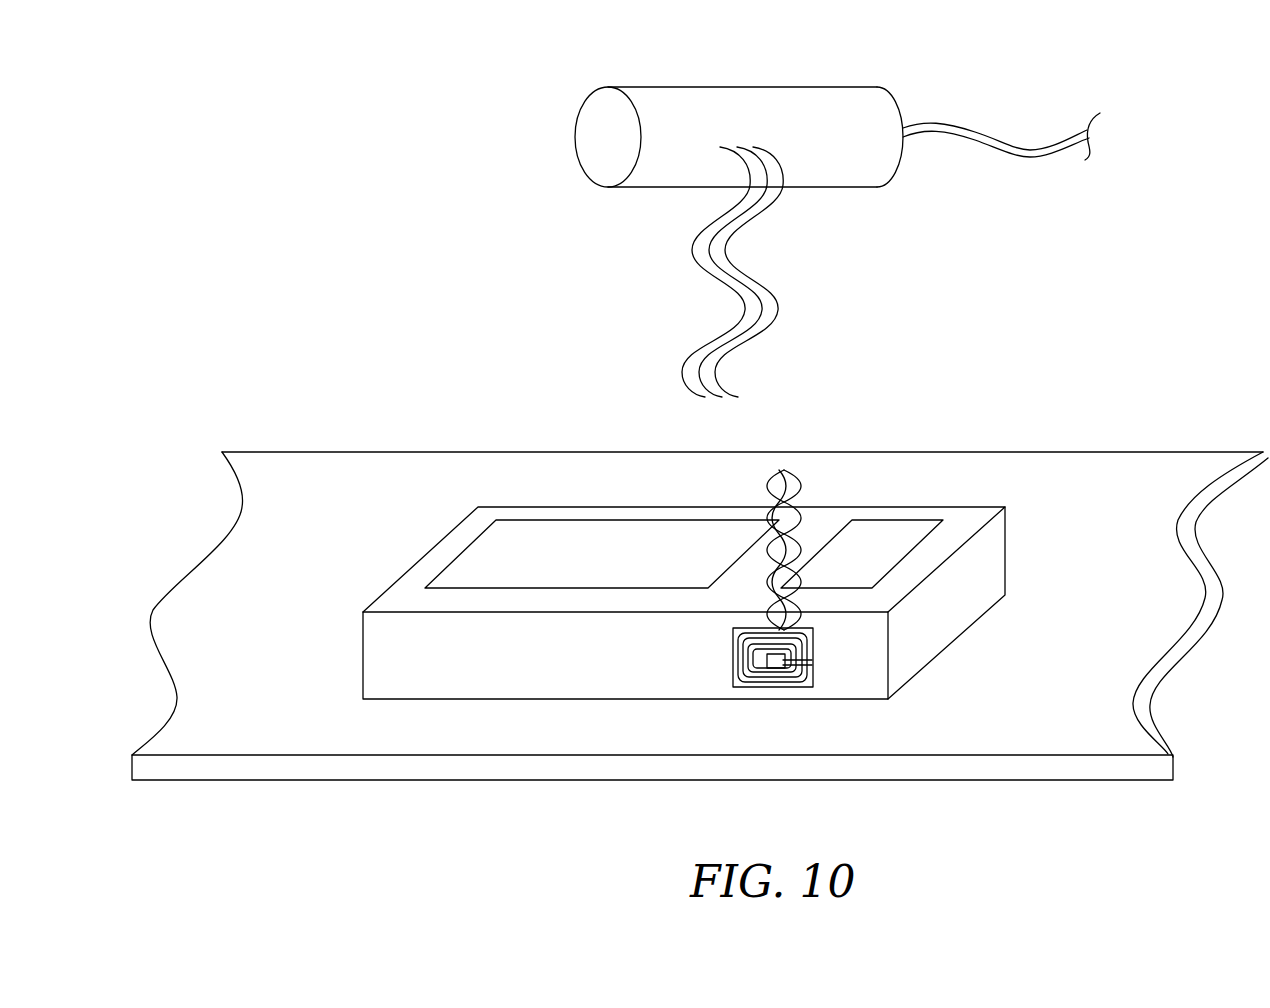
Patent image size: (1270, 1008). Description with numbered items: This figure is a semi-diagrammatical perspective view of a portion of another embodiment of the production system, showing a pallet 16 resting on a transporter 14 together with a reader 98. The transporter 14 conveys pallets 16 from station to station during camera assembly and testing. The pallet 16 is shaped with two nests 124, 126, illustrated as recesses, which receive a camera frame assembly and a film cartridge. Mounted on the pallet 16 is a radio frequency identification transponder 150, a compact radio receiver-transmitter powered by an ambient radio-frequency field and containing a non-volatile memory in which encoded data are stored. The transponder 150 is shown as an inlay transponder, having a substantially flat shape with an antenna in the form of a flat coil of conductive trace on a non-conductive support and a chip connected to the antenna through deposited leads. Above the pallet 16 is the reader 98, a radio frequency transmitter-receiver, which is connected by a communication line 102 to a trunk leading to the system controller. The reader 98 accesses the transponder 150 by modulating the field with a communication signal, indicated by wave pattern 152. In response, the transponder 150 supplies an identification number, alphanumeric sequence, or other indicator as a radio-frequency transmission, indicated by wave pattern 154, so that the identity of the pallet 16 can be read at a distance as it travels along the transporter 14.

The transporter 14 is at (1053, 452).
The pallet 16 is at (562, 507).
The reader 98 is at (856, 87).
The communication line 102 is at (1003, 141).
The nest 124 is at (878, 534).
The nest 126 is at (503, 586).
The radio frequency identification transponder 150 is at (733, 657).
The wave pattern 152 is at (776, 304).
The wave pattern 154 is at (802, 483).